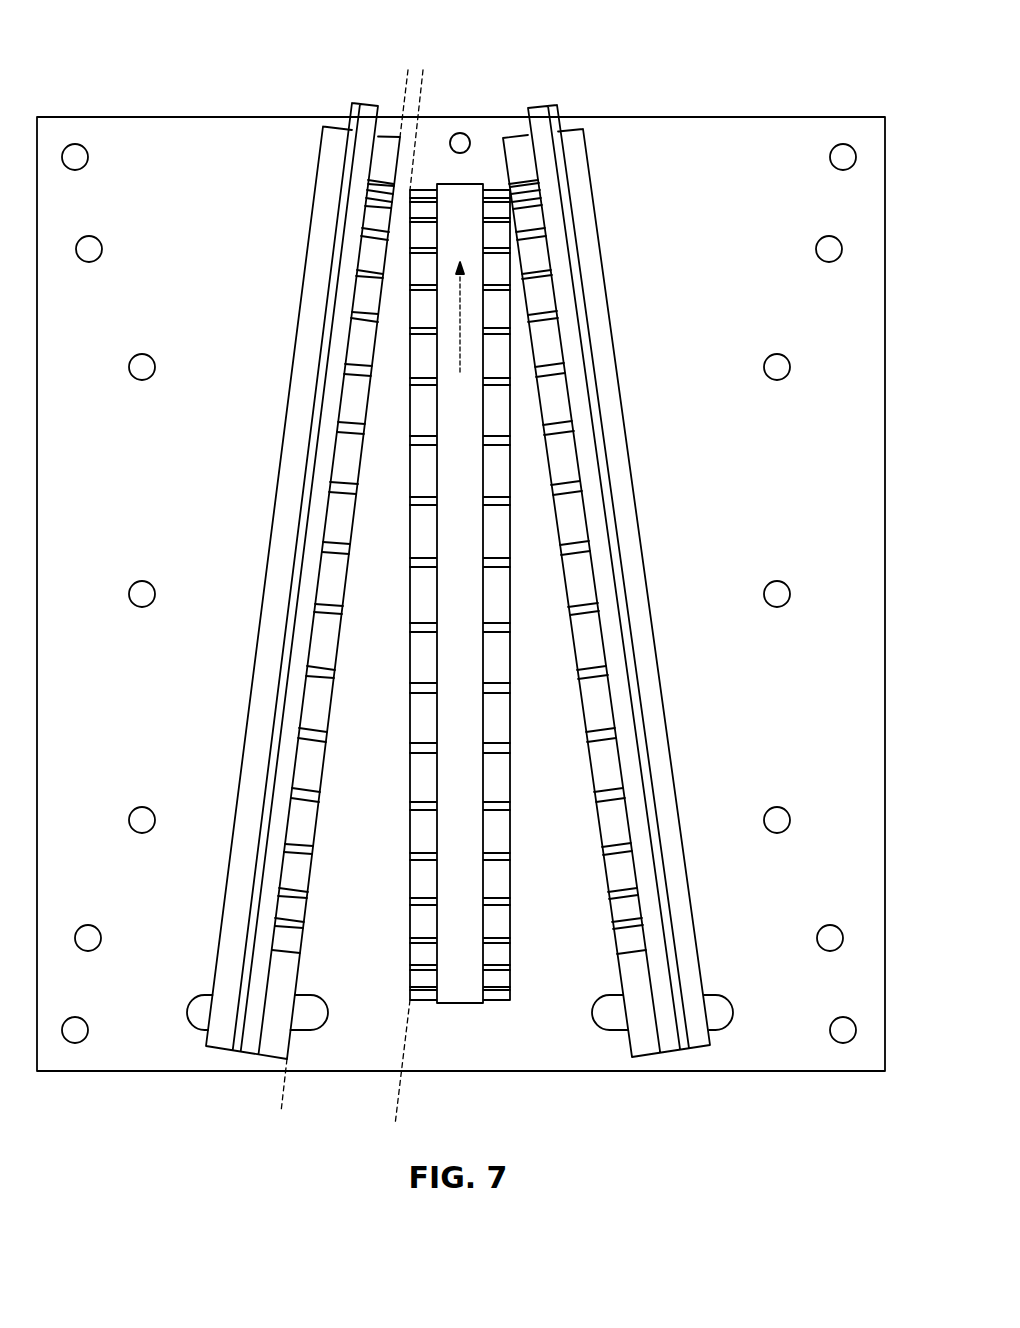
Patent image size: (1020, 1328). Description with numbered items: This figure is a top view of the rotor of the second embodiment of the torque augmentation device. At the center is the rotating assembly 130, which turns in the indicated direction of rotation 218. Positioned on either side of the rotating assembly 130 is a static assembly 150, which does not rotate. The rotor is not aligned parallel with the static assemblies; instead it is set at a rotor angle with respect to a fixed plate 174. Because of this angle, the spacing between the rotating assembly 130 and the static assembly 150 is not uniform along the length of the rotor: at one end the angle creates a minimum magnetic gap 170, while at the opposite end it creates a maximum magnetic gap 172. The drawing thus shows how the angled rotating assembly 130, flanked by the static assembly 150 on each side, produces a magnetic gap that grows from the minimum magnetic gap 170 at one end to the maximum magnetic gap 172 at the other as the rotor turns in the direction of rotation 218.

The rotating assembly 130 is at (450, 1024).
The static assembly 150 is at (335, 88).
The minimum magnetic gap 170 is at (387, 77).
The maximum magnetic gap 172 is at (392, 1122).
The rotor angle with respect to a fixed plate 174 is at (391, 444).
The direction of rotation 218 is at (460, 298).